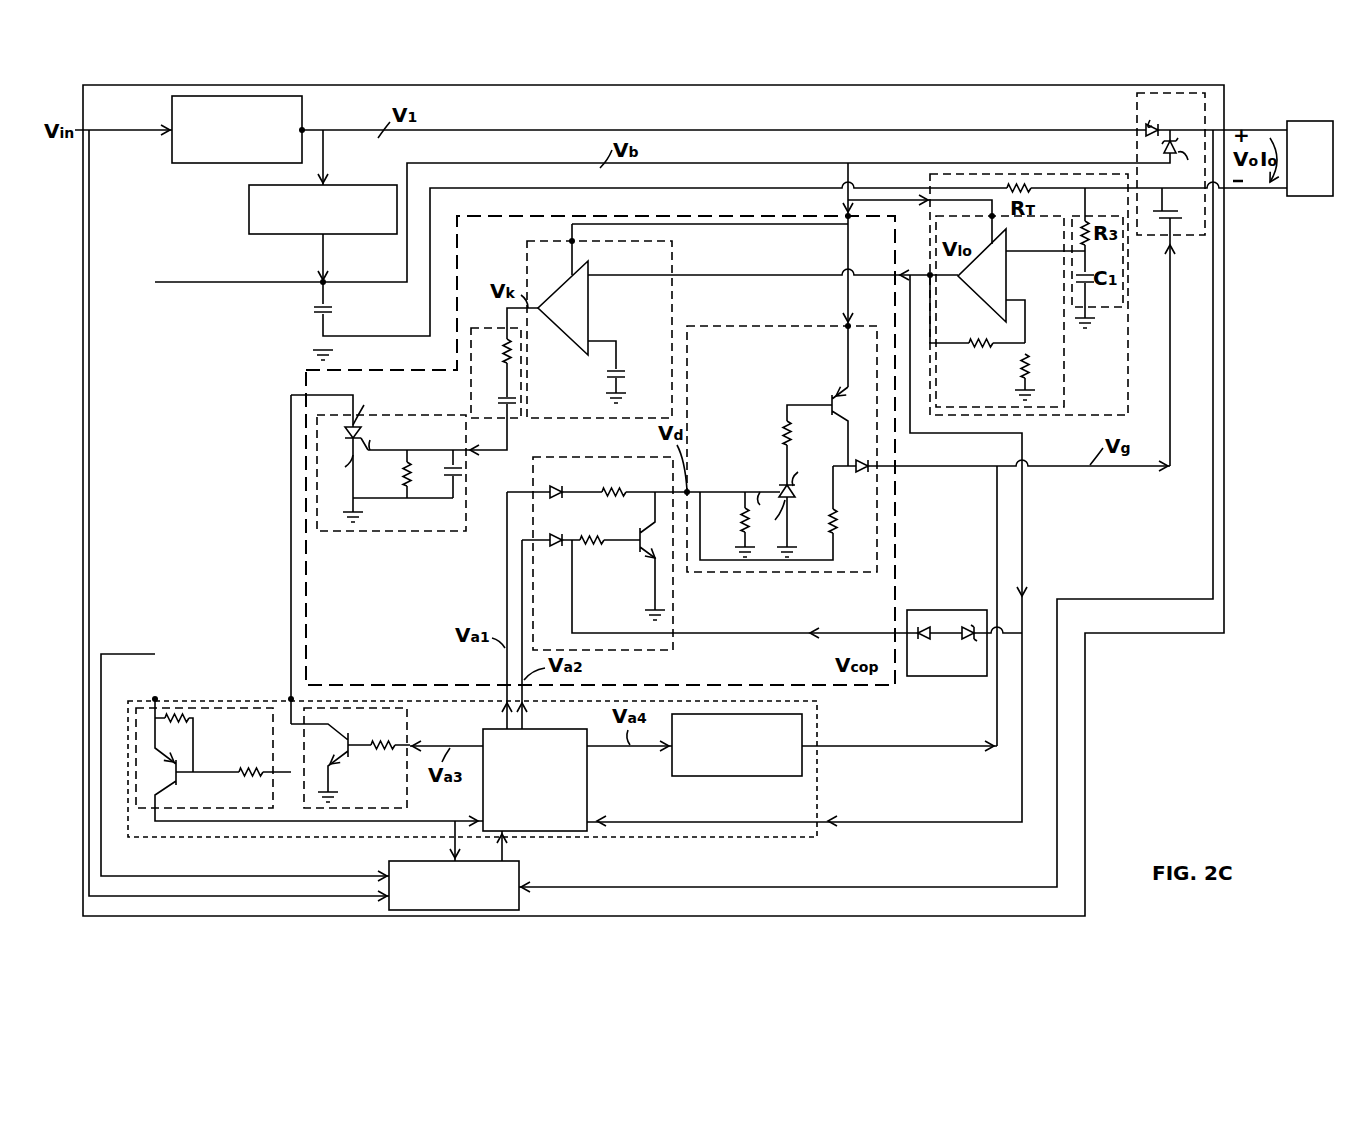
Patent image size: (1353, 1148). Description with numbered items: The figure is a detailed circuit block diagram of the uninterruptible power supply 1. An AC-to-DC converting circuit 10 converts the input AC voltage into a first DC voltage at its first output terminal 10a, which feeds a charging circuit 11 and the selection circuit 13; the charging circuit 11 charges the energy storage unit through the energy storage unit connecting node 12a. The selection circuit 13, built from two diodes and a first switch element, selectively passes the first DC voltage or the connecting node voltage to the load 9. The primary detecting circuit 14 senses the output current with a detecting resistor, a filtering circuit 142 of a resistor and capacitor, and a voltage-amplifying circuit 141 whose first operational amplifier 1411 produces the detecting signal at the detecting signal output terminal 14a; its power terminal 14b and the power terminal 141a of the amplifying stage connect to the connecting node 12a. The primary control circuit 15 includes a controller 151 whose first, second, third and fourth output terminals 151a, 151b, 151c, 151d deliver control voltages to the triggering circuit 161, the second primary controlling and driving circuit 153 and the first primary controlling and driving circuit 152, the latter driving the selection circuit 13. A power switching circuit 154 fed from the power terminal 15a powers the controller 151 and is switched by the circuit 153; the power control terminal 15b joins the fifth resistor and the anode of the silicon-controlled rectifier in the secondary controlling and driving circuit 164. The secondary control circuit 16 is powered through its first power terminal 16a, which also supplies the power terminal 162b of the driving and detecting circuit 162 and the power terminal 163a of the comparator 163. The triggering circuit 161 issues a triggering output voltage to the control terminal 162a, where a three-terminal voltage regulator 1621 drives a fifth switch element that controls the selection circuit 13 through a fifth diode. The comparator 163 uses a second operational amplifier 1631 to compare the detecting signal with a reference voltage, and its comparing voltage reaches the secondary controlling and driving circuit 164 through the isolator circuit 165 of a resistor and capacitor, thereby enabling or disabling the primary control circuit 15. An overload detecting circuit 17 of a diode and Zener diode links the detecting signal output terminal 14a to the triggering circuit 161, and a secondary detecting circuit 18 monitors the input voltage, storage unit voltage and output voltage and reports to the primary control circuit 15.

The uninterruptible power supply 1 is at (1224, 495).
The load 9 is at (1306, 121).
The AC-to-DC converting circuit 10 is at (190, 165).
The first output terminal 10a is at (304, 128).
The charging circuit 11 is at (249, 210).
The energy storage unit connecting node 12a is at (321, 281).
The selection circuit 13 is at (1206, 218).
The primary detecting circuit 14 is at (1130, 360).
The detecting signal output terminal 14a is at (928, 275).
The power terminal 14b is at (926, 198).
The voltage-amplifying circuit 141 is at (1064, 380).
The power terminal 141a is at (994, 218).
The first operational amplifier 1411 is at (1008, 283).
The filtering circuit 142 is at (1172, 283).
The primary control circuit 15 is at (818, 803).
The power terminal 15a is at (168, 670).
The power control terminal 15b is at (290, 697).
The controller 151 is at (587, 810).
The first output terminal 151a is at (505, 727).
The second output terminal 151b is at (524, 728).
The third output terminal 151c is at (482, 745).
The fourth output terminal 151d is at (587, 746).
The first primary controlling and driving circuit 152 is at (737, 776).
The second primary controlling and driving circuit 153 is at (407, 808).
The power switching circuit 154 is at (232, 707).
The secondary control circuit 16 is at (306, 555).
The first power terminal 16a is at (849, 219).
The triggering circuit 161 is at (673, 598).
The driving and detecting circuit 162 is at (800, 572).
The control terminal 162a is at (689, 490).
The power terminal 162b is at (845, 324).
The three-terminal voltage regulator 1621 is at (783, 485).
The comparator 163 is at (527, 275).
The power terminal 163a is at (570, 240).
The second operational amplifier 1631 is at (590, 306).
The secondary controlling and driving circuit 164 is at (406, 531).
The isolator circuit 165 is at (471, 392).
The overload detecting circuit 17 is at (944, 609).
The secondary detecting circuit 18 is at (519, 877).